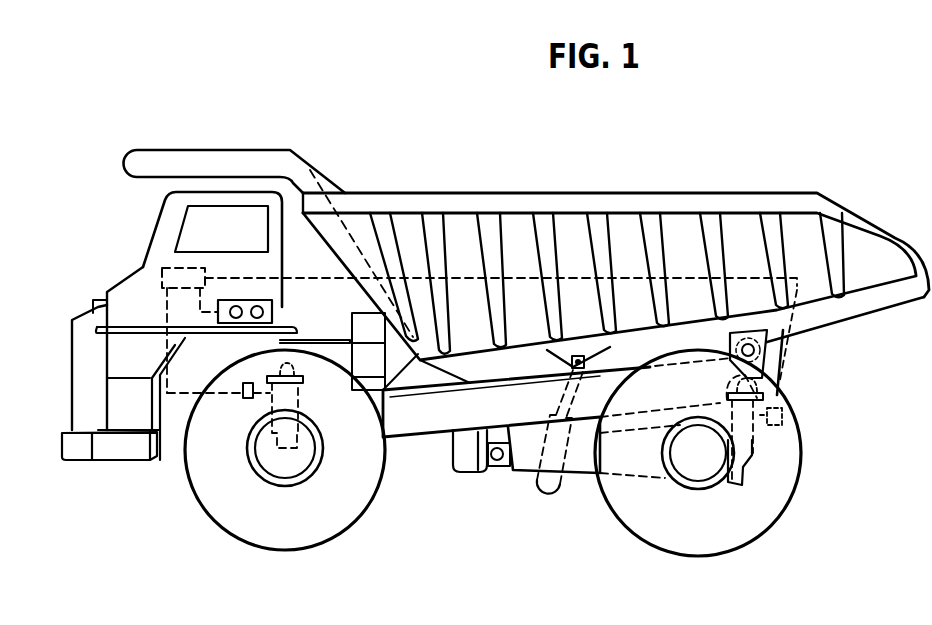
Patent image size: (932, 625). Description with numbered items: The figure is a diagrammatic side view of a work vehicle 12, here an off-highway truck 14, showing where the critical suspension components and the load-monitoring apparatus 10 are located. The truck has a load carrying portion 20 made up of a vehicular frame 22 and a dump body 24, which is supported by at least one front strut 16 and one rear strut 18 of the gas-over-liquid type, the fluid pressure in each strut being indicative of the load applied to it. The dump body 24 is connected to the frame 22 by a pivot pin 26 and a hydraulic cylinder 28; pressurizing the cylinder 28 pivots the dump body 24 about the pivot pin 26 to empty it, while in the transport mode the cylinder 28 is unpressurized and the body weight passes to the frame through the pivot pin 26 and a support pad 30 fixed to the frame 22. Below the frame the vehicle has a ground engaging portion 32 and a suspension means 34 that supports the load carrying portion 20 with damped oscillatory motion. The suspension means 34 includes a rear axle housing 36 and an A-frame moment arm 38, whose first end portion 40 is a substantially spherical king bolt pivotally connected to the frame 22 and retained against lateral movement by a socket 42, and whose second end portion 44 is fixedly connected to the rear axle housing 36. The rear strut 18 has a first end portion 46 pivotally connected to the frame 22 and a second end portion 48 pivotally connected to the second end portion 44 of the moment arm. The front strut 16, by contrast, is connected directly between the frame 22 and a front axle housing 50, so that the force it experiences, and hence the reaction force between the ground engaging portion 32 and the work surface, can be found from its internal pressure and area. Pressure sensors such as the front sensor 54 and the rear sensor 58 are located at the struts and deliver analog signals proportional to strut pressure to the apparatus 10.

The apparatus 10 is at (158, 262).
The work vehicle 12 is at (334, 141).
The off-highway truck 14 is at (223, 326).
The front strut 16 is at (300, 400).
The rear strut 18 is at (750, 452).
The load carrying portion 20 is at (722, 186).
The vehicular frame 22 is at (557, 418).
The dump body 24 is at (607, 283).
The pivot pin 26 is at (768, 362).
The hydraulic cylinder 28 is at (554, 474).
The support pad 30 is at (532, 380).
The ground engaging portion 32 is at (660, 557).
The suspension means 34 is at (655, 483).
The rear axle housing 36 is at (672, 455).
The A-frame moment arm 38 is at (554, 446).
The first end portion 40 is at (507, 468).
The socket 42 is at (461, 452).
The second end portion 44 is at (697, 490).
The first end portion 46 is at (783, 393).
The second end portion 48 is at (745, 490).
The front axle housing 50 is at (275, 468).
The pressure sensor 54 is at (243, 400).
The pressure sensor 58 is at (784, 423).